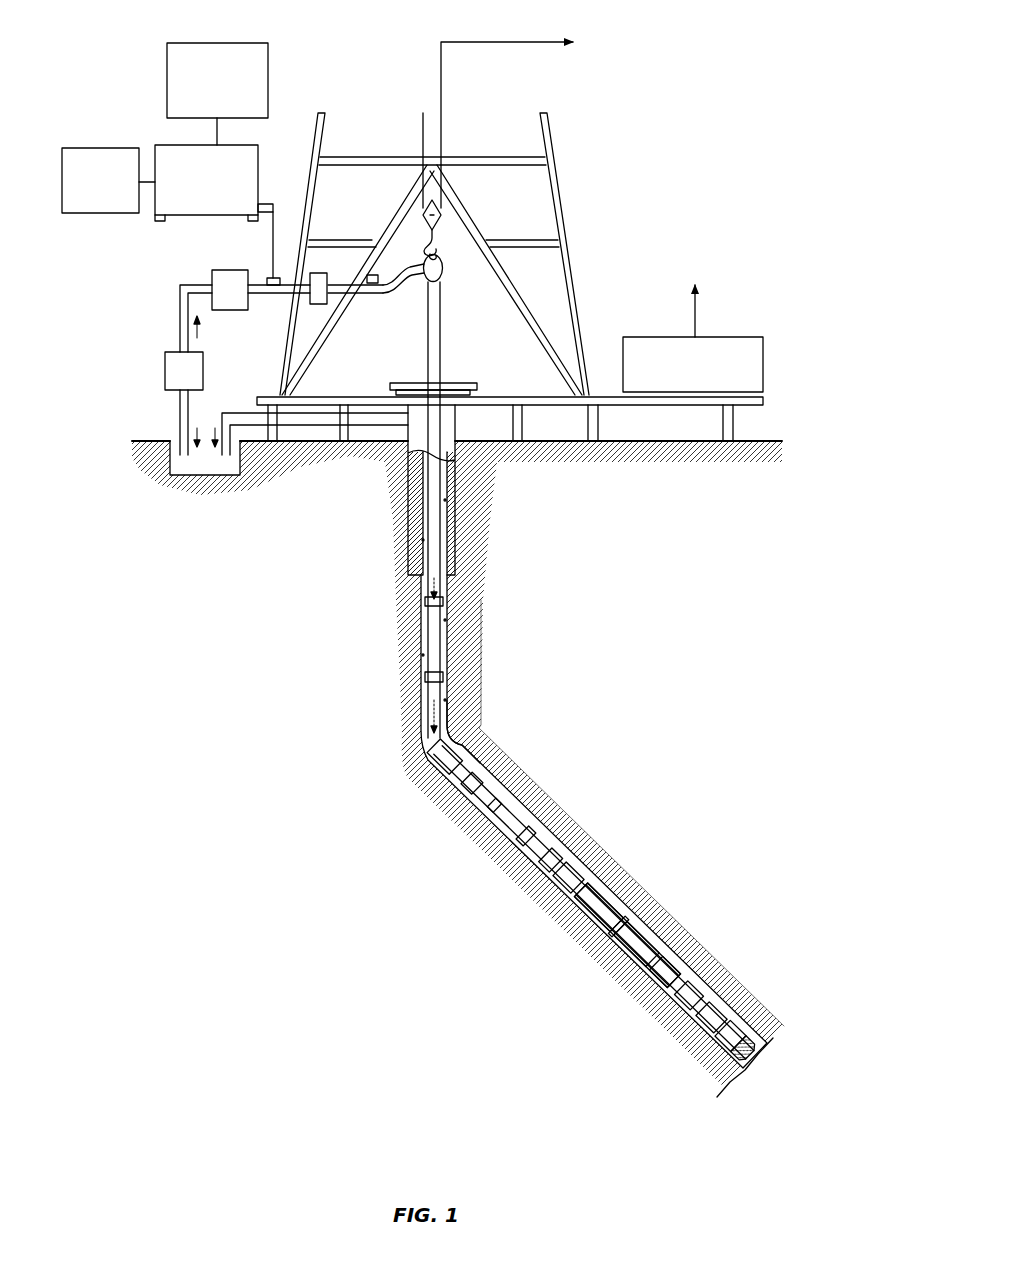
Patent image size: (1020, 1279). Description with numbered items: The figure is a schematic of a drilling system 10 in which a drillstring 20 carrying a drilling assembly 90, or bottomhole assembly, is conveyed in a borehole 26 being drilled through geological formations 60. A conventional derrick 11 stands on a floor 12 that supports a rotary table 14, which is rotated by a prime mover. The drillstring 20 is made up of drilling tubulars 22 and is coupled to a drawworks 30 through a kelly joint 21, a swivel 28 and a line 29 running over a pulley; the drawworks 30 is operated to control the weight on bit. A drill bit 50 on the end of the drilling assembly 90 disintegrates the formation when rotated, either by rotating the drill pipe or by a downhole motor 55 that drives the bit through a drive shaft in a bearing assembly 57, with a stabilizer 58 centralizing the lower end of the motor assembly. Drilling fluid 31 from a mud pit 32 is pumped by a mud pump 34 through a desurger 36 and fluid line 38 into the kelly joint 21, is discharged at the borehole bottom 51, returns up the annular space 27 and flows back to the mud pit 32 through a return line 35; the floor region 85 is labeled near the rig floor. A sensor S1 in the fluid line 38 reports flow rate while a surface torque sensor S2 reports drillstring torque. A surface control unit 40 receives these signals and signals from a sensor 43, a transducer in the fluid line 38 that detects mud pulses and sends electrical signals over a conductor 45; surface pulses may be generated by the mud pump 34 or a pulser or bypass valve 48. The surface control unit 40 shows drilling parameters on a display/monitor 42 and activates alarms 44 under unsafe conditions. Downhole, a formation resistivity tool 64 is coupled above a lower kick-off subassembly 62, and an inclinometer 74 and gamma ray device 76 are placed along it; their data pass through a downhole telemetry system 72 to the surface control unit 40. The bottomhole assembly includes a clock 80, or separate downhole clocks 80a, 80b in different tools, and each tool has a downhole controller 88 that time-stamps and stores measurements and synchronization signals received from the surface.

The drilling system 10 is at (363, 82).
The derrick 11 is at (568, 251).
The floor 12 is at (594, 397).
The rotary table 14 is at (456, 385).
The drillstring 20 is at (450, 640).
The kelly joint 21 is at (441, 321).
The drilling tubulars 22 is at (427, 645).
The borehole 26 is at (449, 728).
The annular space 27 is at (462, 752).
The swivel 28 is at (428, 284).
The line 29 is at (443, 136).
The drawworks 30 is at (730, 337).
The drilling fluid 31 is at (178, 460).
The mud pit 32 is at (208, 480).
The mud pump 34 is at (180, 352).
The return line 35 is at (368, 422).
The desurger 36 is at (225, 270).
The fluid line 38 is at (275, 294).
The surface control unit 40 is at (160, 145).
The display/monitor 42 is at (256, 43).
The sensor 43 is at (270, 277).
The alarms 44 is at (95, 219).
The conductor 45 is at (292, 190).
The pulser or bypass valve 48 is at (318, 273).
The drill bit 50 is at (740, 1049).
The borehole bottom 51 is at (700, 1122).
The downhole motor 55 is at (514, 803).
The bearing assembly 57 is at (724, 989).
The stabilizer 58 is at (725, 991).
The geological formations 60 is at (478, 856).
The lower kick-off subassembly 62 is at (662, 1005).
The formation resistivity tool 64 is at (627, 950).
The downhole telemetry system 72 is at (432, 732).
The inclinometer 74 is at (638, 933).
The gamma ray device 76 is at (672, 953).
The clock 80 is at (616, 893).
The downhole clock 80a is at (620, 938).
The downhole clock 80b is at (630, 911).
The rig floor surface 85 is at (305, 403).
The downhole controller 88 is at (558, 913).
The drilling assembly 90 is at (576, 752).
The sensor S1 is at (385, 277).
The surface torque sensor S2 is at (441, 303).